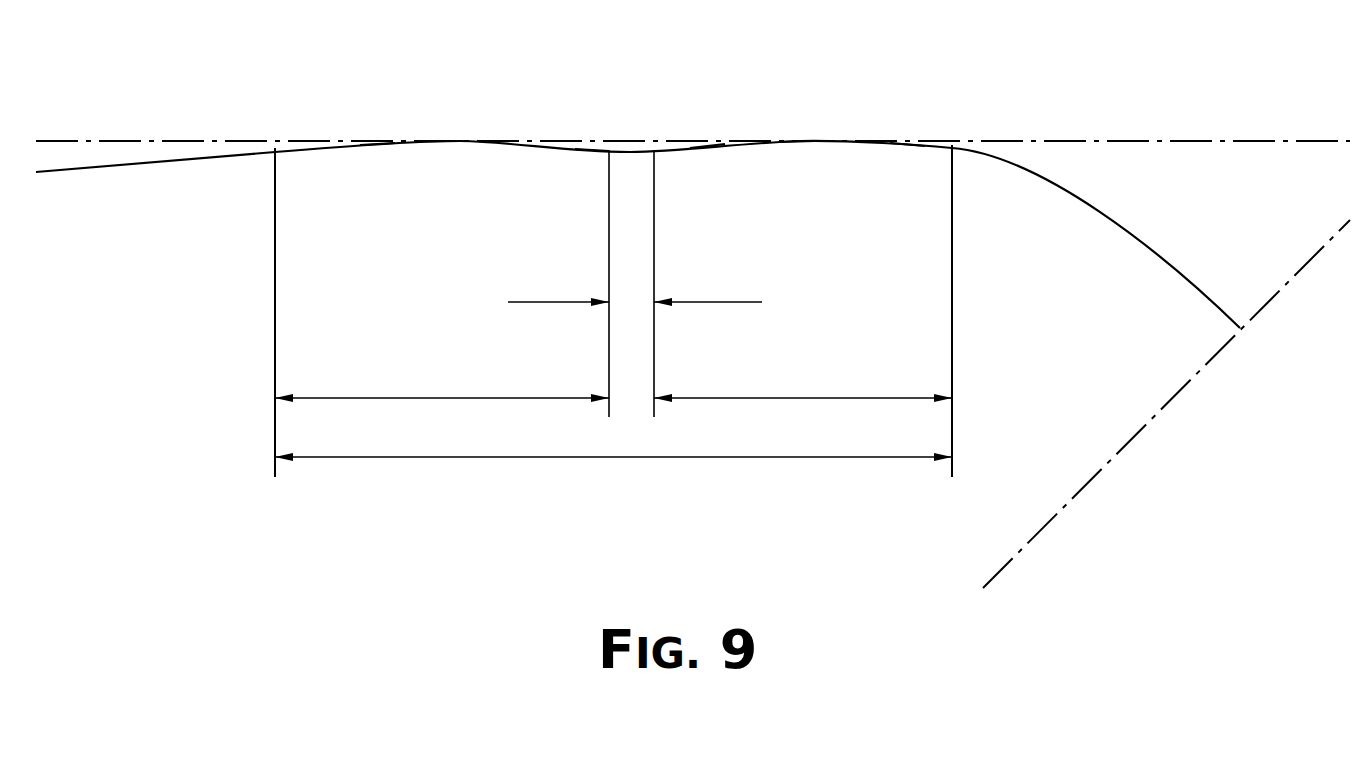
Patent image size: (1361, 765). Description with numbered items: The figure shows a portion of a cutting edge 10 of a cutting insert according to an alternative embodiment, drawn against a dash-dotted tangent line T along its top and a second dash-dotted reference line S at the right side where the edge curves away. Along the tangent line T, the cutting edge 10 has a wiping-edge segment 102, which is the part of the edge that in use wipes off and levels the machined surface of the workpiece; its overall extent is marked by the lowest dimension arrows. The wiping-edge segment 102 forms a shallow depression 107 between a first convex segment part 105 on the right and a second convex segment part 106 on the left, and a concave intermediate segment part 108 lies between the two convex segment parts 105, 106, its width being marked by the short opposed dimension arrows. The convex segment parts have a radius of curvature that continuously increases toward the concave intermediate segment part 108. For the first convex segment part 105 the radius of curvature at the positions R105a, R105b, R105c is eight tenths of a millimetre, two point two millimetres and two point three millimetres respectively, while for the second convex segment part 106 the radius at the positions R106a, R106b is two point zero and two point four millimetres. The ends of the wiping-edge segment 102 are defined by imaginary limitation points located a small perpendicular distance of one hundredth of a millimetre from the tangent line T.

The cutting edge 10 is at (1080, 207).
The wiping-edge segment 102 is at (598, 457).
The first convex segment part 105 is at (765, 398).
The second convex segment part 106 is at (403, 398).
The depression 107 is at (642, 107).
The concave intermediate segment part 108 is at (733, 302).
The tangent line T is at (1097, 140).
The side reference line S is at (1153, 418).
The radius of curvature position of second convex segment part R106a is at (383, 253).
The radius of curvature position of second convex segment part R106b is at (581, 253).
The radius of curvature position of first convex segment part R105c is at (717, 253).
The radius of curvature position of first convex segment part R105b is at (798, 253).
The radius of curvature position of first convex segment part R105a is at (895, 253).